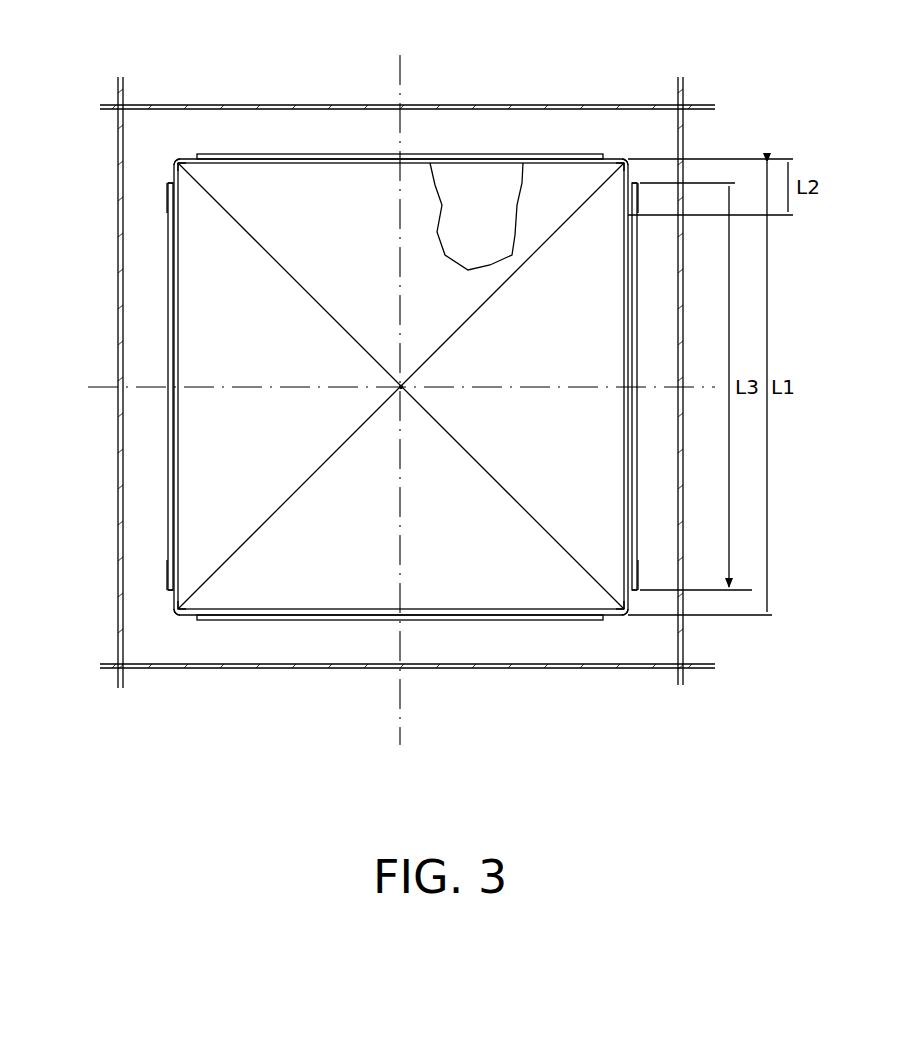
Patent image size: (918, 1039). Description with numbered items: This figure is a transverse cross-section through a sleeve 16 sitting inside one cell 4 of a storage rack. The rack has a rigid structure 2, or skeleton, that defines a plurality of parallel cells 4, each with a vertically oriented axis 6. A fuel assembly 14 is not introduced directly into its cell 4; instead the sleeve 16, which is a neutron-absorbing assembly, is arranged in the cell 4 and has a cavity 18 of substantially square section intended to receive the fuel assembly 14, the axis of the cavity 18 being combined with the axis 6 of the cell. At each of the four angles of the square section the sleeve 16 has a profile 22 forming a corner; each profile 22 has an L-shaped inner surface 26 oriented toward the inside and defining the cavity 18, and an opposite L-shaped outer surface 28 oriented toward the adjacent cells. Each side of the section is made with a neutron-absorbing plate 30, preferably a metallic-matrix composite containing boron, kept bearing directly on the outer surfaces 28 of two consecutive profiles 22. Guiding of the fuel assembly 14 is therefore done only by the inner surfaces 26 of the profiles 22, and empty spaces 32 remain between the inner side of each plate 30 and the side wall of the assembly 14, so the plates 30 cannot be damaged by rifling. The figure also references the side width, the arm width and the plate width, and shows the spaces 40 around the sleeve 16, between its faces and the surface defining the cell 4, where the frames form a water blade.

The rigid structure 2 is at (407, 345).
The cell 4 is at (290, 122).
The axis 6 is at (404, 385).
The fuel assembly 14 is at (351, 270).
The sleeve 16 is at (153, 151).
The cavity 18 is at (489, 214).
The profile 22 is at (180, 201).
The inner surface 26 is at (175, 178).
The outer surface 28 is at (185, 158).
The neutron-absorbing plate 30 is at (540, 157).
The empty space 32 is at (370, 160).
The space 40 is at (157, 244).